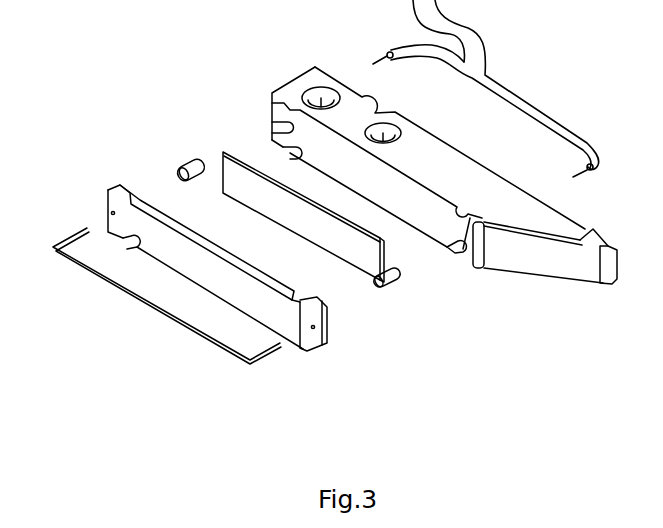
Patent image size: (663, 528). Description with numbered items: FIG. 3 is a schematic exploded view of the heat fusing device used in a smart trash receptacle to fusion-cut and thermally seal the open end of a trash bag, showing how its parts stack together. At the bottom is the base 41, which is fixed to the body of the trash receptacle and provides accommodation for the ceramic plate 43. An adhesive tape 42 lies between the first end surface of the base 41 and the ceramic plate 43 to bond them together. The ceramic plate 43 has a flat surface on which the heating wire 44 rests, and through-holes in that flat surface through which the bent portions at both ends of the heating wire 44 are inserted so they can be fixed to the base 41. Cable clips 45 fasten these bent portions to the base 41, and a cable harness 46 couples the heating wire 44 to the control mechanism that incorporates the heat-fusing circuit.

The base 41 is at (520, 248).
The adhesive tape 42 is at (337, 242).
The ceramic plate 43 is at (282, 313).
The heating wire 44 is at (142, 302).
The cable clip 45 is at (187, 160).
The cable harness 46 is at (425, 13).